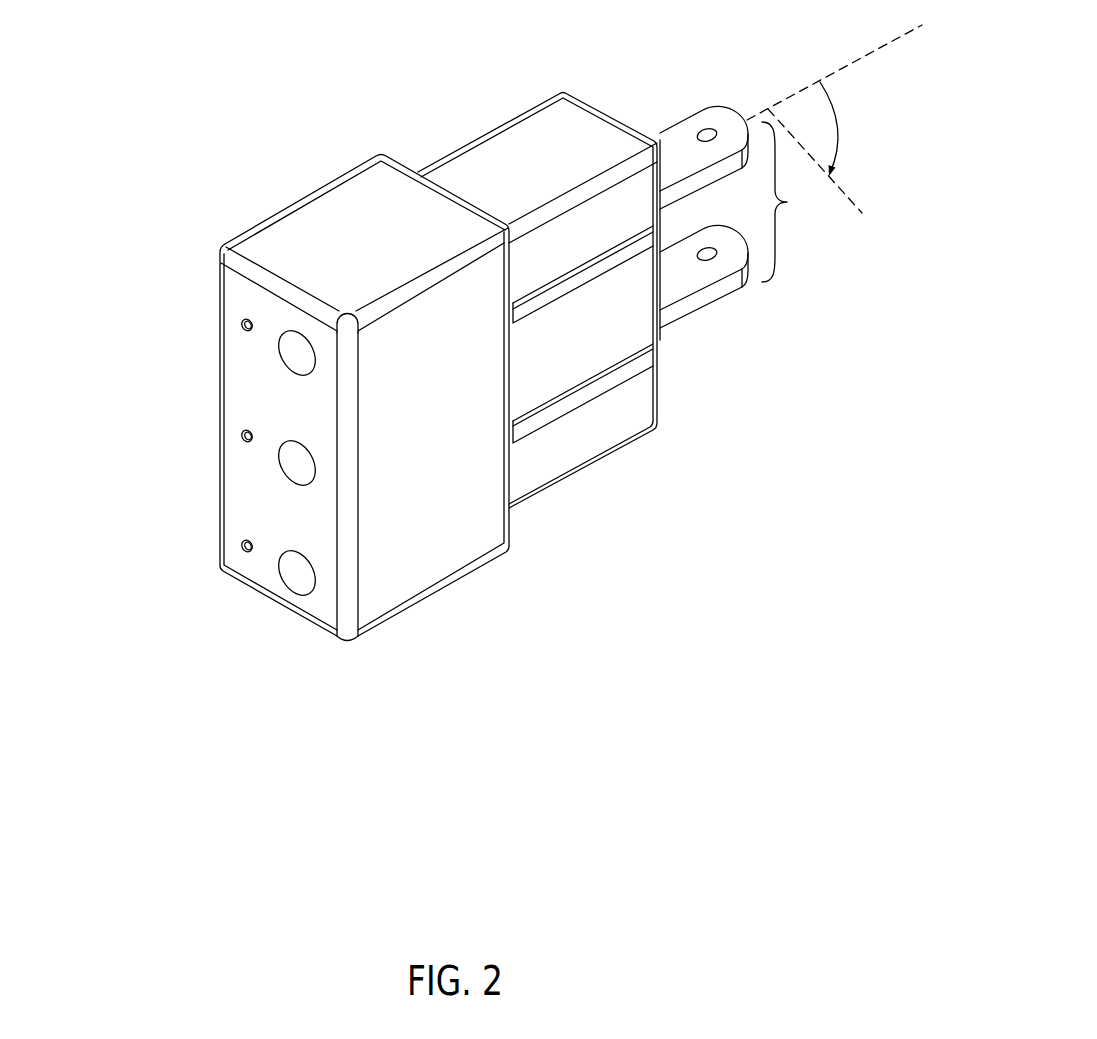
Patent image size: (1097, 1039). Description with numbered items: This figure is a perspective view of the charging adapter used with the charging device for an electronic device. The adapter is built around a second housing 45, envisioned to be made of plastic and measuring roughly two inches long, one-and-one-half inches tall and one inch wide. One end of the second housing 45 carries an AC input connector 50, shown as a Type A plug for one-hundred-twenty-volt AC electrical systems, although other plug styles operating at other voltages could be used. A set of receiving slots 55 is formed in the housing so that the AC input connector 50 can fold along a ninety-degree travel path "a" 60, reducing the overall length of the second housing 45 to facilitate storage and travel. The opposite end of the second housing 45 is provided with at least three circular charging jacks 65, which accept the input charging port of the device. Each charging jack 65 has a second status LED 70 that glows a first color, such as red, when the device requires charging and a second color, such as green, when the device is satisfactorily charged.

The second housing 45 is at (347, 230).
The AC input connector 50 is at (792, 207).
The receiving slots 55 is at (582, 280).
The travel path "a" 60 is at (863, 107).
The charging jacks 65 is at (300, 360).
The second status LED 70 is at (238, 327).